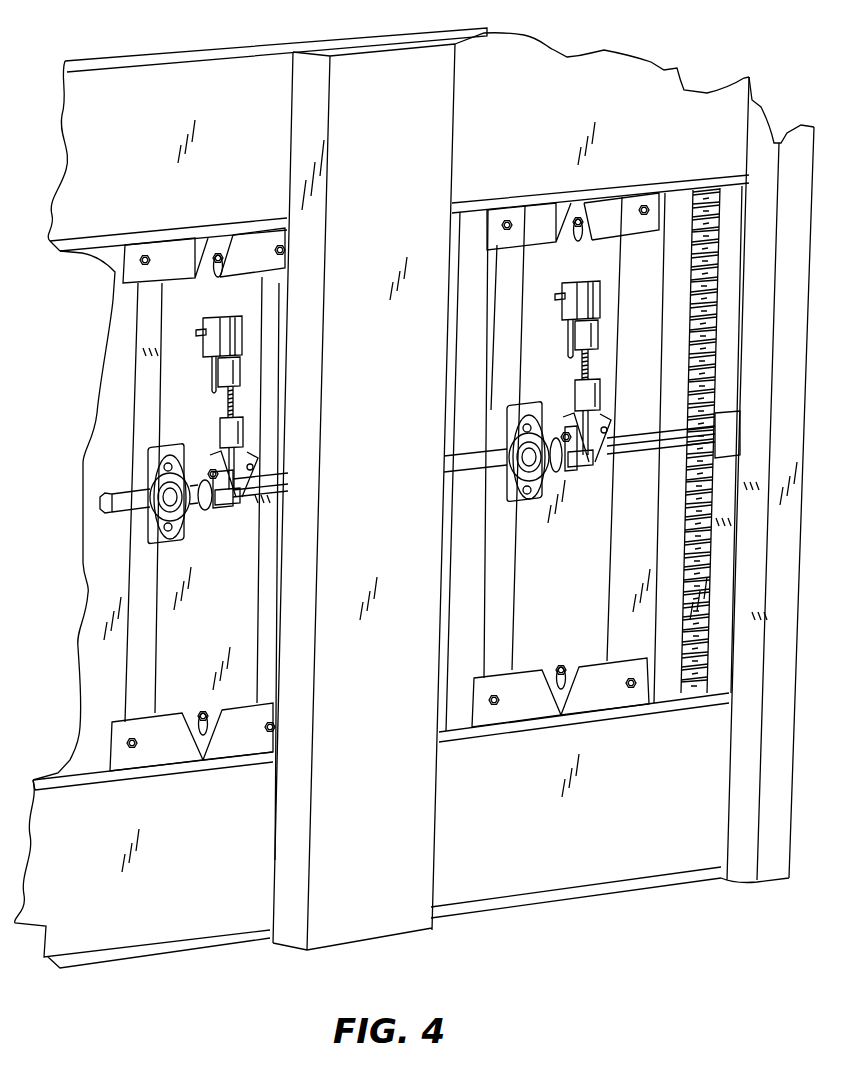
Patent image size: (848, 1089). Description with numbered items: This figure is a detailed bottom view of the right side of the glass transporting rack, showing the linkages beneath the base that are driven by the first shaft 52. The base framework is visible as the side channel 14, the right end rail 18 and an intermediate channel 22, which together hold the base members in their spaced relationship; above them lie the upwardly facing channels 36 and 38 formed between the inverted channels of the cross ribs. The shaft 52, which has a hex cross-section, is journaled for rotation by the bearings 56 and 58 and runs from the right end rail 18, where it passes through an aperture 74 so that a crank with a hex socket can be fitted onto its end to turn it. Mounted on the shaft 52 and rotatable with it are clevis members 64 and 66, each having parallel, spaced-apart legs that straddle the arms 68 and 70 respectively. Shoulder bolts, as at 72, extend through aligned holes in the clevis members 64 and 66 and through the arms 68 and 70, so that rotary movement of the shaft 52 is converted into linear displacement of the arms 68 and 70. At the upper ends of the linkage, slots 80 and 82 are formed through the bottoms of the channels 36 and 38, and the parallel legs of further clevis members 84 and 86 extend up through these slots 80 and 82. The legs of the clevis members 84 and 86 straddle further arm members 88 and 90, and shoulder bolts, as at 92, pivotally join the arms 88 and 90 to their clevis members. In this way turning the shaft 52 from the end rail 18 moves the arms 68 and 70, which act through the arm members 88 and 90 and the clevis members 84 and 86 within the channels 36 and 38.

The side channel 14 is at (522, 136).
The end rail 18 is at (743, 243).
The intermediate channel 22 is at (411, 183).
The upwardly facing channel 36 is at (587, 568).
The upwardly facing channel 38 is at (214, 651).
The first shaft 52 is at (681, 453).
The bearing 56 is at (512, 480).
The bearing 58 is at (155, 520).
The clevis member 64 is at (572, 475).
The clevis member 66 is at (257, 493).
The arm 68 is at (579, 393).
The arm 70 is at (222, 430).
The shoulder bolt 72 is at (253, 462).
The aperture 74 is at (726, 417).
The slot 80 is at (597, 318).
The slot 82 is at (237, 358).
The clevis member 84 is at (594, 281).
The clevis member 86 is at (233, 318).
The arm member 88 is at (577, 332).
The arm member 90 is at (222, 368).
The shoulder bolt 92 is at (197, 332).